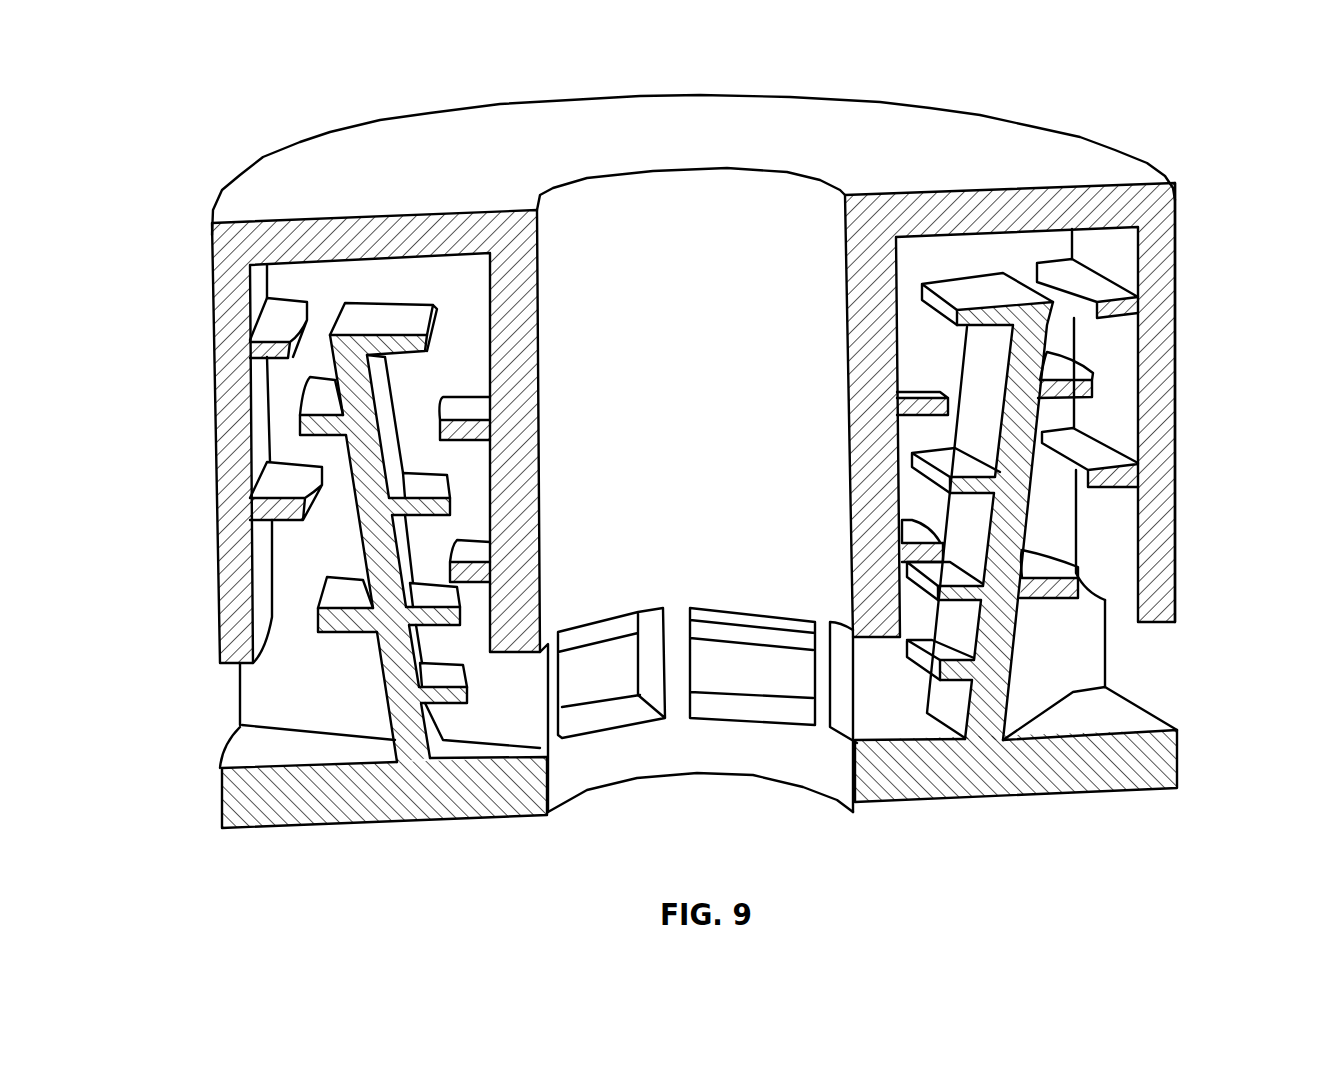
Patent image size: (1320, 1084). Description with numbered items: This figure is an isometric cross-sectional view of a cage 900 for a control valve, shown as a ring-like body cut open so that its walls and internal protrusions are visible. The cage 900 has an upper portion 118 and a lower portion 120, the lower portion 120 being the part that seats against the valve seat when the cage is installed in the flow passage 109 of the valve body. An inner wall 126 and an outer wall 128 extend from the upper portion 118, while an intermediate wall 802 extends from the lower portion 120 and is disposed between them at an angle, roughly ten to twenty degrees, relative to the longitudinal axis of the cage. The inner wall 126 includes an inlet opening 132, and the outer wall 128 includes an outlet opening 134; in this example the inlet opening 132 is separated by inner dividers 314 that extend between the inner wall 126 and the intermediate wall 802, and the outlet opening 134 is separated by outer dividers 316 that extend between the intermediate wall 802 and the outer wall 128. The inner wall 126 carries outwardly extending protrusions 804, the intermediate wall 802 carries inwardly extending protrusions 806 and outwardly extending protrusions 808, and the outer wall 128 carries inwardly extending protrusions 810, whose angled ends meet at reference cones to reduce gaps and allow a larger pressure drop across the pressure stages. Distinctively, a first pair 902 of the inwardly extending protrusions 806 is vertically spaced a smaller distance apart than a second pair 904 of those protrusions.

The cage 900 is at (283, 112).
The upper portion 118 is at (223, 248).
The inner wall 126 is at (862, 233).
The outer wall 128 is at (1152, 400).
The flow passage 109 is at (1120, 532).
The lower portion 120 is at (233, 800).
The inlet opening 132 is at (605, 712).
The outlet opening 134 is at (238, 678).
The inner dividers 314 is at (548, 688).
The outer dividers 316 is at (255, 706).
The intermediate wall 802 is at (391, 594).
The outwardly extending protrusions 804 is at (473, 425).
The inwardly extending protrusions 806 is at (427, 342).
The outwardly extending protrusions 808 is at (313, 422).
The inwardly extending protrusions 810 is at (270, 512).
The first pair of inwardly extending protrusions 902 is at (920, 577).
The second pair of inwardly extending protrusions 904 is at (917, 297).